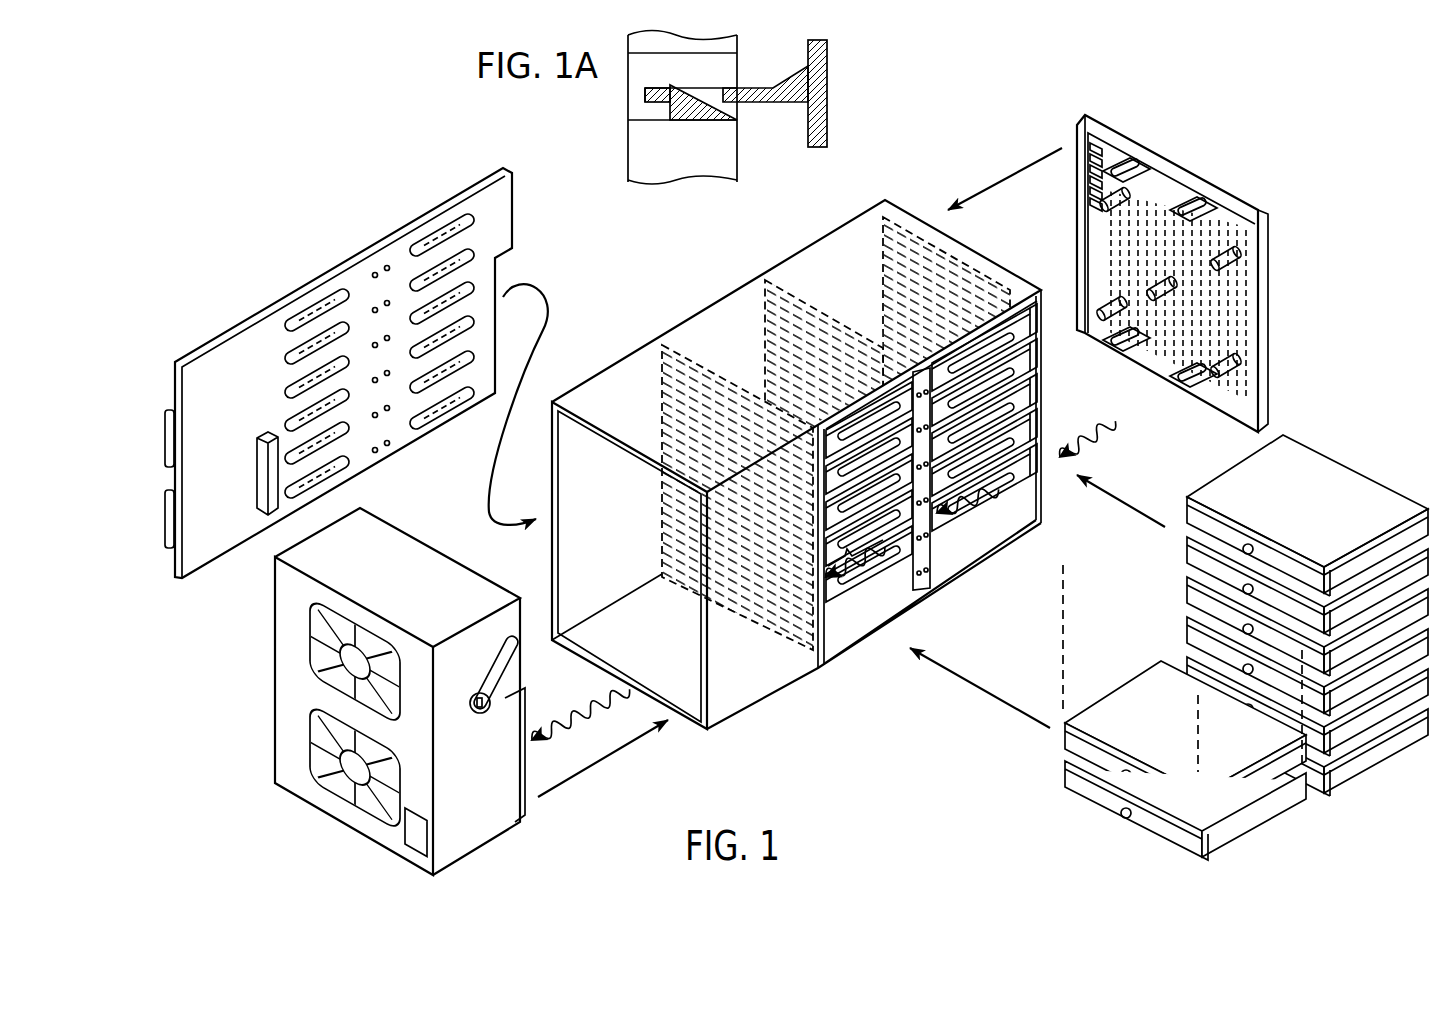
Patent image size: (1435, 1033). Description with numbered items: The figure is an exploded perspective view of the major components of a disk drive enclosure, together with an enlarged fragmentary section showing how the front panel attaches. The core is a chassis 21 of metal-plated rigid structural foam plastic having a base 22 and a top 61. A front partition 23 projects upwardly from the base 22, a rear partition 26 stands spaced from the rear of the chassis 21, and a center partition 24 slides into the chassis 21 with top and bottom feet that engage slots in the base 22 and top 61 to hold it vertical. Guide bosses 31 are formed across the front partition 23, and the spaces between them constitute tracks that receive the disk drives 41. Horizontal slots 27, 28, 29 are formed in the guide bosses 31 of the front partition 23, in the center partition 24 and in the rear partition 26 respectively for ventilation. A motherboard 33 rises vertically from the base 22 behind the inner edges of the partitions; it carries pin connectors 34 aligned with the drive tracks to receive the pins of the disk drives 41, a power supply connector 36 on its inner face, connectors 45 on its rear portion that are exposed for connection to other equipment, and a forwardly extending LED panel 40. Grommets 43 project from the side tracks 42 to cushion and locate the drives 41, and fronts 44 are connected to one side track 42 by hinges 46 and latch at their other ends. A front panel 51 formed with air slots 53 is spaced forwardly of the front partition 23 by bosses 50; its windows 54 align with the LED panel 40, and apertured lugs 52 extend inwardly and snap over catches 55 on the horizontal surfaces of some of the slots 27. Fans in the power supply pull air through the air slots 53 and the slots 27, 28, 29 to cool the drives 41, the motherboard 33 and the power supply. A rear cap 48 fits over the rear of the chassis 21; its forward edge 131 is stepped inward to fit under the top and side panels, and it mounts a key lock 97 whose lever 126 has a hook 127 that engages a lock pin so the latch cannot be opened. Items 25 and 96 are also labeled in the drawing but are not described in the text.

In FIG. 1, the chassis 21 is at (728, 284).
In FIG. 1, the base 22 is at (831, 580).
In FIG. 1A, the front partition 23 is at (656, 108).
In FIG. 1, the front partition 23 is at (1016, 417).
In FIG. 1, the center partition 24 is at (932, 563).
In FIG. 1, the card module 25 is at (900, 355).
In FIG. 1, the rear partition 26 is at (822, 668).
In FIG. 1A, the horizontal slots 27 is at (645, 55).
In FIG. 1, the horizontal slots 27 is at (1020, 417).
In FIG. 1, the horizontal slots 28 is at (905, 552).
In FIG. 1, the horizontal slots 29 is at (780, 572).
In FIG. 1, the guide bosses 31 is at (1030, 380).
In FIG. 1, the motherboard 33 is at (360, 257).
In FIG. 1, the pin connectors 34 is at (452, 228).
In FIG. 1, the power supply connector 36 is at (262, 475).
In FIG. 1, the LED panel 40 is at (332, 370).
In FIG. 1, the disk drives 41 is at (1322, 485).
In FIG. 1, the side tracks 42 is at (1188, 826).
In FIG. 1, the grommets 43 is at (1125, 818).
In FIG. 1, the fronts 44 is at (1250, 822).
In FIG. 1, the connectors 45 is at (166, 525).
In FIG. 1, the hinges 46 is at (1205, 860).
In FIG. 1, the rear cap 48 is at (392, 683).
In FIG. 1, the bosses 50 is at (1240, 260).
In FIG. 1A, the front panel 51 is at (828, 55).
In FIG. 1, the front panel 51 is at (1182, 274).
In FIG. 1A, the lugs 52 is at (771, 104).
In FIG. 1, the lugs 52 is at (1125, 172).
In FIG. 1, the air slots 53 is at (1197, 268).
In FIG. 1, the windows 54 is at (1163, 172).
In FIG. 1A, the catches 55 is at (678, 105).
In FIG. 1, the top 61 is at (731, 352).
In FIG. 1, the latch housing 96 is at (502, 704).
In FIG. 1, the lock 97 is at (477, 716).
In FIG. 1, the lever 126 is at (493, 674).
In FIG. 1, the hook 127 is at (514, 657).
In FIG. 1, the forward edge 131 is at (423, 543).